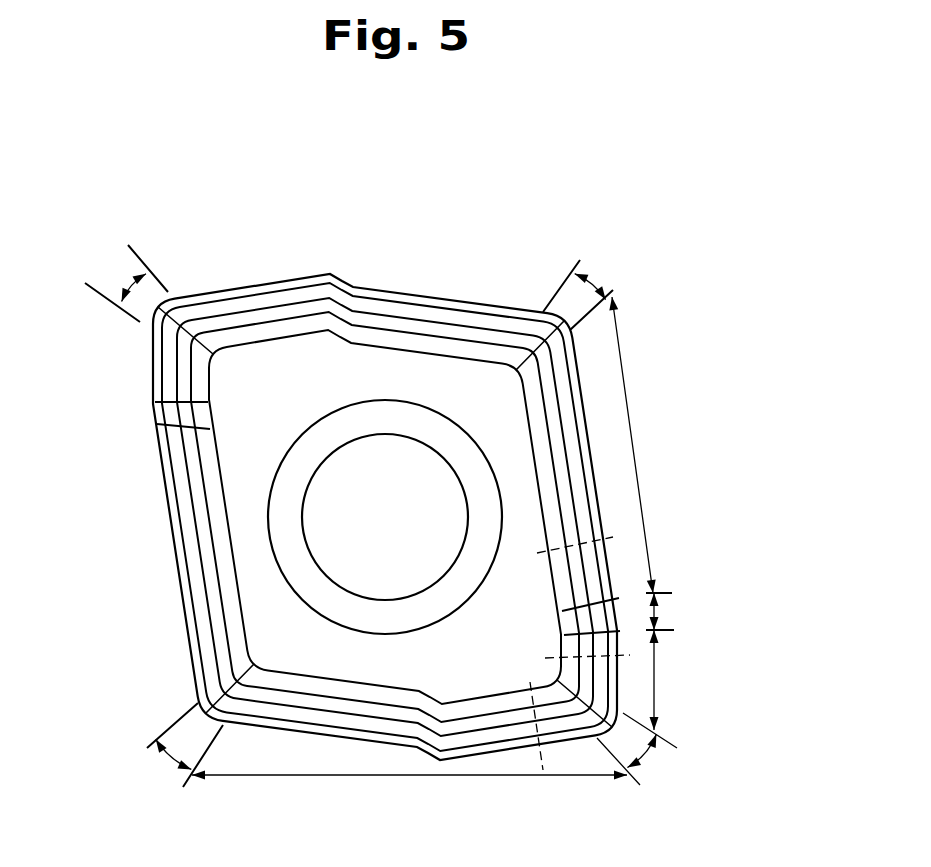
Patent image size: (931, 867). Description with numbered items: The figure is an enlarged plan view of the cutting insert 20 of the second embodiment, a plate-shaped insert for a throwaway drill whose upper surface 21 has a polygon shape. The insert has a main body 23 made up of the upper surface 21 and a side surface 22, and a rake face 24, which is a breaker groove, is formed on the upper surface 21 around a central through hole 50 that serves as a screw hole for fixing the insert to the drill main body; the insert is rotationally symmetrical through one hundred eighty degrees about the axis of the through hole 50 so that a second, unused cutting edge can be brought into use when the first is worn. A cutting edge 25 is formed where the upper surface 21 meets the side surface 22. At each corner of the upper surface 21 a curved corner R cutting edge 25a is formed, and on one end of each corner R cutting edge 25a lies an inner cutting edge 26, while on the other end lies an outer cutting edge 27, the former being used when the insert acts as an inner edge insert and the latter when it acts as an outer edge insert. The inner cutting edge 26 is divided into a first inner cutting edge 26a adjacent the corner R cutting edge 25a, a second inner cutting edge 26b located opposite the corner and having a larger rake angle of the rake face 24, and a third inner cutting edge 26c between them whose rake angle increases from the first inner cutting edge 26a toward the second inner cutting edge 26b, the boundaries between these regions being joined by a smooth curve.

The cutting insert 20 is at (720, 355).
The upper surface 21 is at (250, 388).
The side surface 22 is at (212, 423).
The main body 23 is at (80, 370).
The rake face 24 is at (570, 495).
The cutting edge 25 is at (447, 526).
The corner R cutting edge 25a is at (120, 295).
The inner cutting edge 26 is at (164, 512).
The first inner cutting edge 26a is at (660, 678).
The second inner cutting edge 26b is at (640, 481).
The third inner cutting edge 26c is at (655, 613).
The outer cutting edge 27 is at (377, 288).
The through hole 50 is at (335, 522).